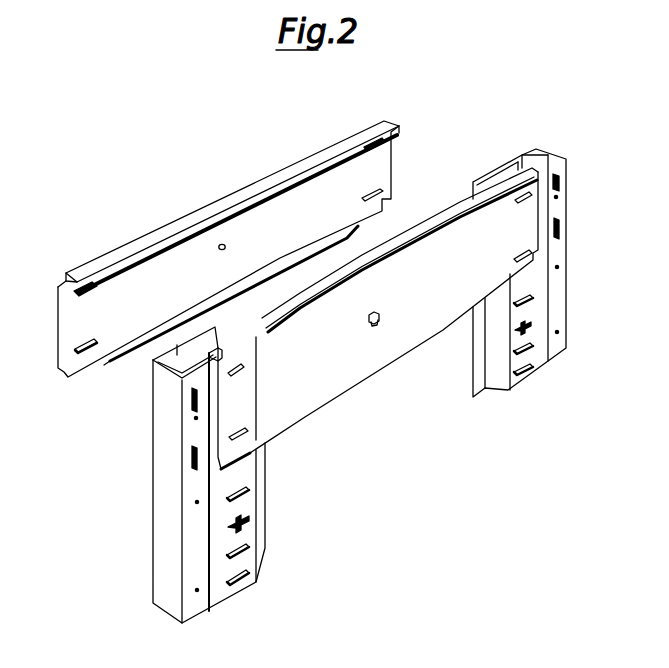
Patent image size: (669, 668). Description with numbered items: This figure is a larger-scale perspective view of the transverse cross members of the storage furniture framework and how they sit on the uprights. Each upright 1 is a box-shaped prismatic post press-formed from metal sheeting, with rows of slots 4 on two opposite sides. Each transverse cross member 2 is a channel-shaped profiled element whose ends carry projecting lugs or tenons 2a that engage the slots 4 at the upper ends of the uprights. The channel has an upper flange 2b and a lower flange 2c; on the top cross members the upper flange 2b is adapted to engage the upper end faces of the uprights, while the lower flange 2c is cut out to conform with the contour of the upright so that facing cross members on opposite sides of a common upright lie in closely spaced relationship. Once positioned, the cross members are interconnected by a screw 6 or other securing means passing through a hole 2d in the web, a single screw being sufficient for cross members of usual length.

The upright 1 is at (350, 386).
The transverse cross member 2 is at (276, 284).
The projecting lug or tenon 2a is at (80, 342).
The upper flange 2b is at (243, 192).
The lower flange 2c is at (117, 360).
The hole 2d is at (219, 245).
The slot 4 is at (240, 488).
The screw 6 is at (378, 326).